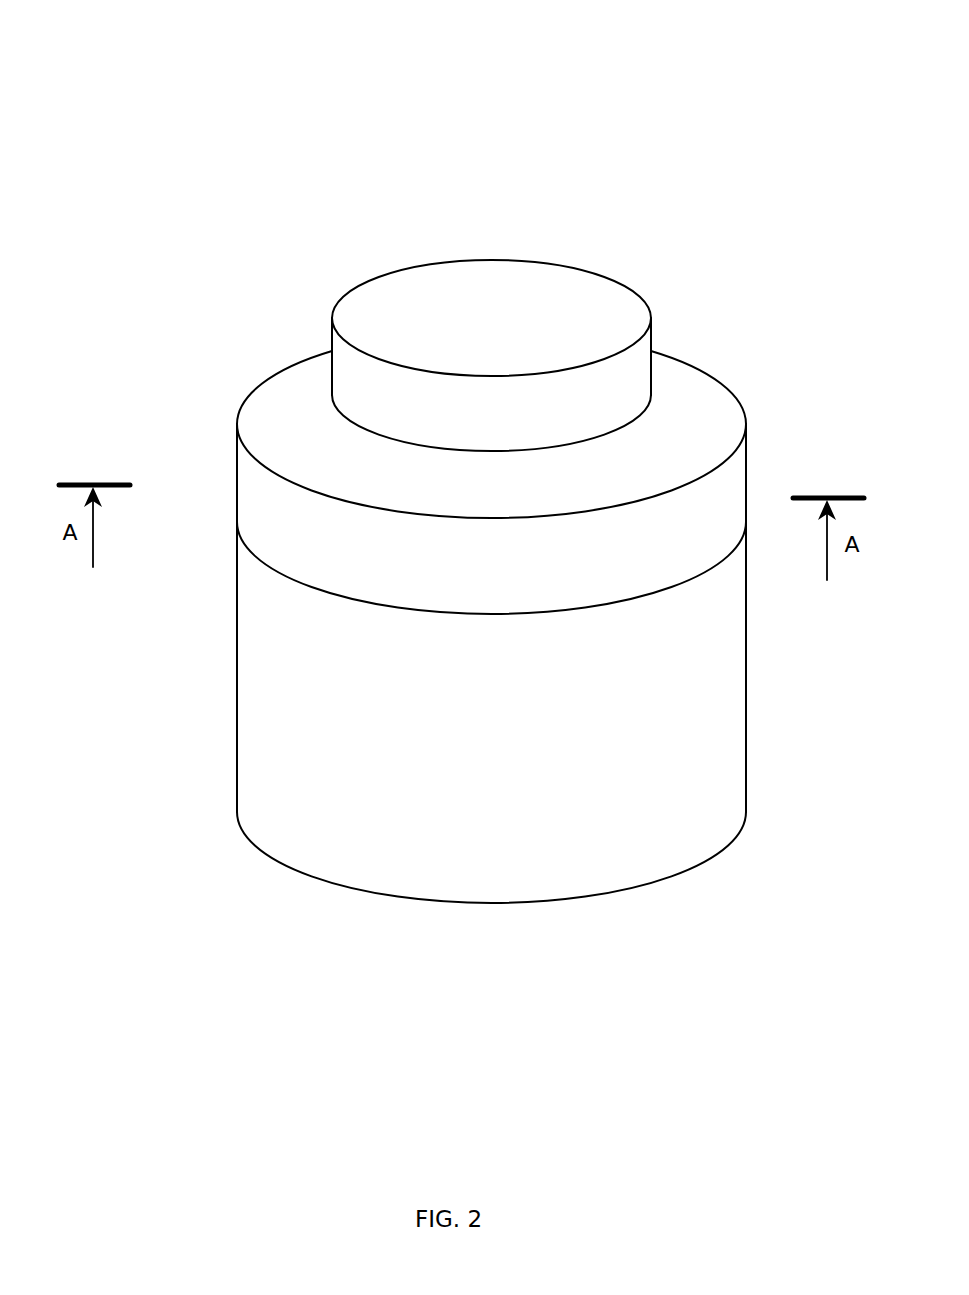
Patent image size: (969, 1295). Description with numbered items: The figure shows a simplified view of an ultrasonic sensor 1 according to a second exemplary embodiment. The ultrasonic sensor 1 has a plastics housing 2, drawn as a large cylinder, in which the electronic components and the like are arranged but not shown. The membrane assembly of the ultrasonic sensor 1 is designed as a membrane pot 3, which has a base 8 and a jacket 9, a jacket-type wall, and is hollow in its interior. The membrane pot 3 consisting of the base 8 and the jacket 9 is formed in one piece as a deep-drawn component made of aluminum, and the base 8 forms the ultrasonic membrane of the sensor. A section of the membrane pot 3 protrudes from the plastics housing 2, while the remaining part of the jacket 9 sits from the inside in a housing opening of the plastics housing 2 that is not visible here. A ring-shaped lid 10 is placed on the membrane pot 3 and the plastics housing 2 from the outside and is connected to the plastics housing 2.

The ultrasonic sensor 1 is at (816, 61).
The plastics housing 2 is at (237, 710).
The membrane pot 3 is at (292, 222).
The base 8 is at (450, 305).
The jacket 9 is at (333, 366).
The ring-shaped lid 10 is at (237, 486).